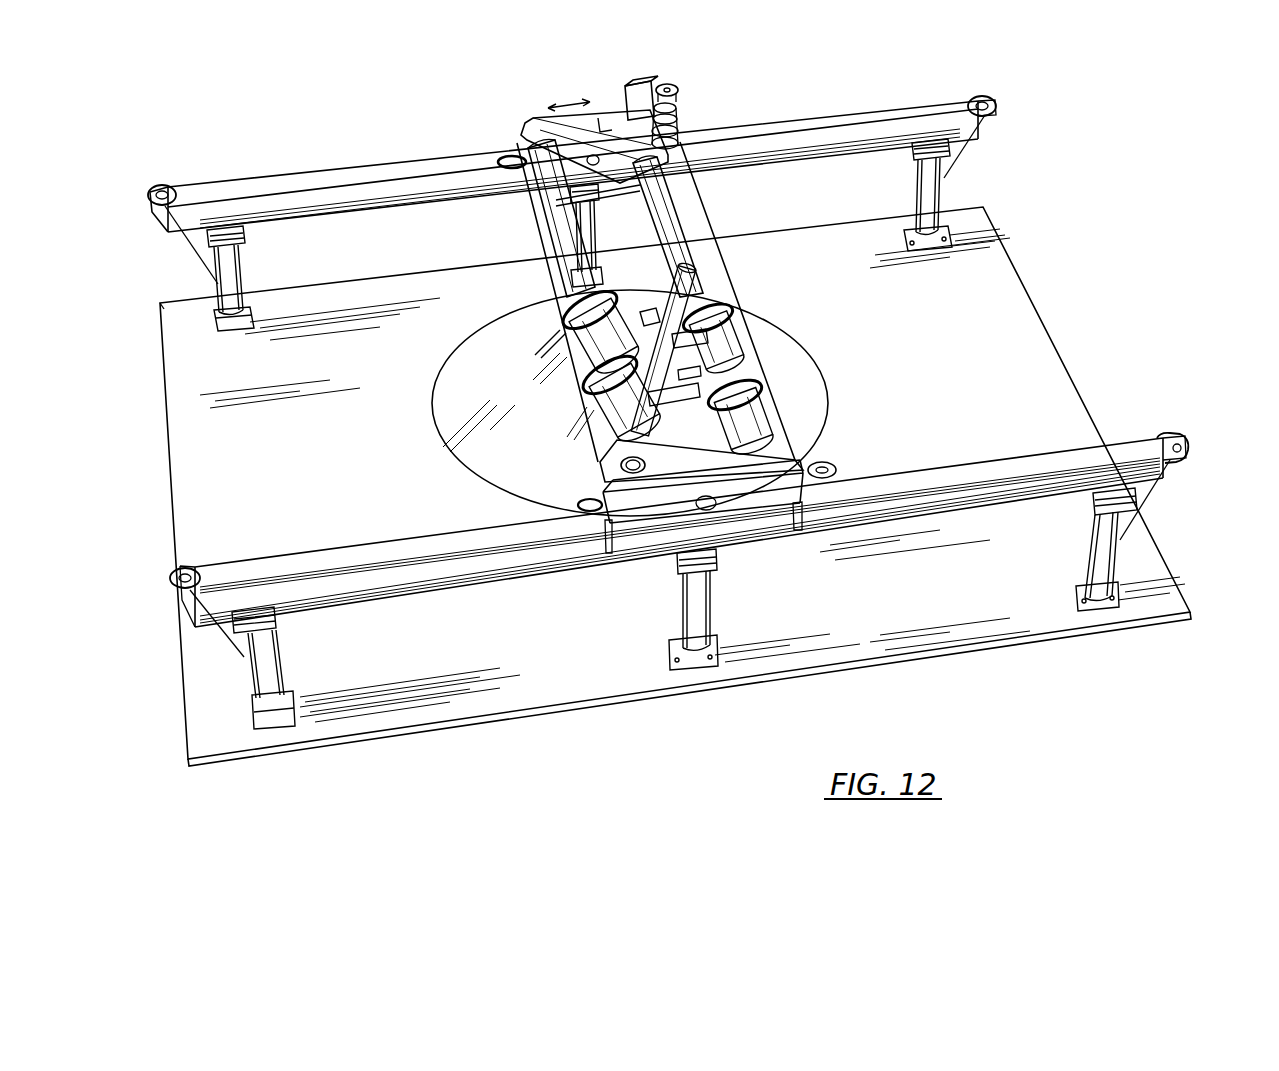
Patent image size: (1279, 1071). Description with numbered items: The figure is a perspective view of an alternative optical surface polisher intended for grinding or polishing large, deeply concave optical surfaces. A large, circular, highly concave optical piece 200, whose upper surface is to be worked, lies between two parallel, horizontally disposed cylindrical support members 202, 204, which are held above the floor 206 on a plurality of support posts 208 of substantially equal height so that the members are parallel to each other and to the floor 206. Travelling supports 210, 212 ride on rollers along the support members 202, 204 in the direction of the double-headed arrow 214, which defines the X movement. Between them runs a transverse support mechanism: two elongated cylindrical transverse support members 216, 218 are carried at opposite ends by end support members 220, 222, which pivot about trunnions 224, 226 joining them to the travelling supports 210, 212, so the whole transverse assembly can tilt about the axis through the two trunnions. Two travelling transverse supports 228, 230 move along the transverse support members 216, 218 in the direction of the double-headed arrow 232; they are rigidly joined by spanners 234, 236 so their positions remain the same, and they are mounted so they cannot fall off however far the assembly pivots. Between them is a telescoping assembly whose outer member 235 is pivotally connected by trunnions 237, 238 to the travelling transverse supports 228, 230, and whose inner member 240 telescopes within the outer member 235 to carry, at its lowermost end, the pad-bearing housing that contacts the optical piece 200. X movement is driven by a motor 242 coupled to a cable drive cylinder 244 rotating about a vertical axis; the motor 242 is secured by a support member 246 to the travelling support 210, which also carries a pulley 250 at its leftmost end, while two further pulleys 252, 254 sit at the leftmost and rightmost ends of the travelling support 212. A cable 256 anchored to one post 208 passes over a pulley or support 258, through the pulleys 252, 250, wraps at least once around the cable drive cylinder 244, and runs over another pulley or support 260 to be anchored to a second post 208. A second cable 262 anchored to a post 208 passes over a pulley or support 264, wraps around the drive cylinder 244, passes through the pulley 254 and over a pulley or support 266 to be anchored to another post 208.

The optical piece 200 is at (815, 383).
The support member 202 is at (878, 135).
The support member 204 is at (980, 512).
The floor 206 is at (324, 445).
The support posts 208 is at (940, 195).
The travelling support 210 is at (590, 115).
The travelling support 212 is at (690, 490).
The double-headed arrow 214 is at (558, 112).
The transverse support member 216 is at (548, 238).
The transverse support member 218 is at (668, 200).
The end support member 220 is at (560, 205).
The end support member 222 is at (590, 478).
The trunnion 224 is at (603, 122).
The trunnion 226 is at (800, 440).
The travelling transverse support 228 is at (600, 345).
The travelling transverse support 230 is at (735, 320).
The double-headed arrow 232 is at (762, 395).
The spanner 234 is at (648, 312).
The outer member 235 is at (593, 397).
The spanner 236 is at (643, 435).
The trunnion 237 is at (545, 347).
The trunnion 238 is at (745, 360).
The inner member 240 is at (705, 278).
The motor 242 is at (680, 90).
The cable drive cylinder 244 is at (688, 125).
The support member 246 is at (645, 88).
The pulley 250 is at (500, 155).
The pulley 252 is at (590, 505).
The pulley 254 is at (840, 470).
The cable 256 is at (780, 125).
The pulley or support 258 is at (178, 575).
The pulley or support 260 is at (995, 105).
The second cable 262 is at (268, 183).
The pulley or support 264 is at (158, 188).
The pulley or support 266 is at (1180, 440).